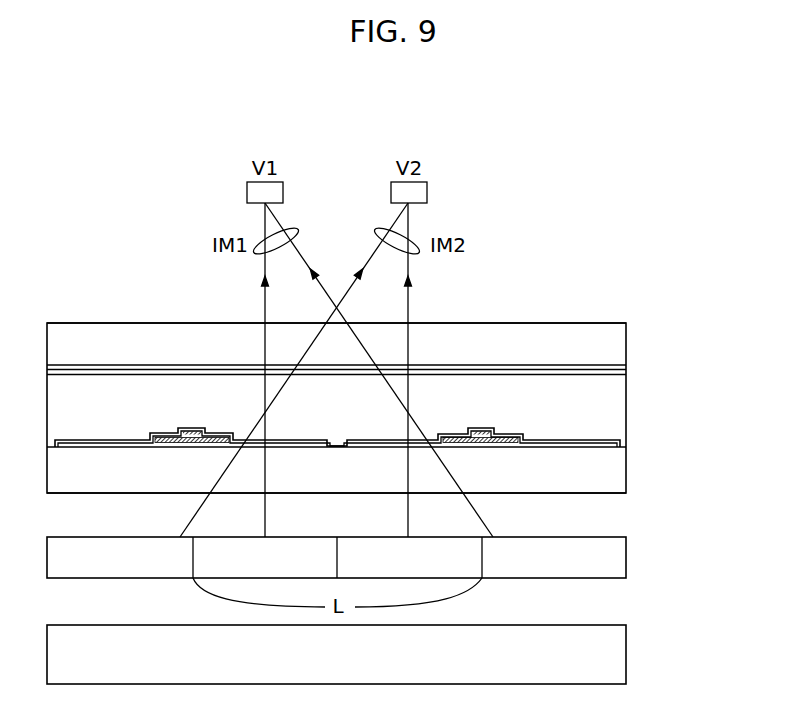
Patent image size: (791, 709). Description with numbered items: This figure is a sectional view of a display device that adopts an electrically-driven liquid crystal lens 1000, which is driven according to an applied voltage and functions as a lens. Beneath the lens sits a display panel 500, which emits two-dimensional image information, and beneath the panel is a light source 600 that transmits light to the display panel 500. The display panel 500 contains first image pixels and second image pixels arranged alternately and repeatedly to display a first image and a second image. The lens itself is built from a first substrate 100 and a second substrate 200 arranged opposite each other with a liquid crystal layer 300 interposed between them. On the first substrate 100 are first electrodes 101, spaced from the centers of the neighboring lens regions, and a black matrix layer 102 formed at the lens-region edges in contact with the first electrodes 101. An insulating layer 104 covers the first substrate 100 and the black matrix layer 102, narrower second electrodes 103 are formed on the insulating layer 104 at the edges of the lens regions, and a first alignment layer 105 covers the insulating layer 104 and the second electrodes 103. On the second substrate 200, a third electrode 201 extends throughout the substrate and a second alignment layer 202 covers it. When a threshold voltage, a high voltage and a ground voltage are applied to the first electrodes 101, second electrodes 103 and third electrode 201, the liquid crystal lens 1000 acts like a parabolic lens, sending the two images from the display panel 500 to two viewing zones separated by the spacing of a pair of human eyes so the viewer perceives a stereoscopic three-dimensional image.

The first substrate 100 is at (617, 483).
The first electrodes 101 is at (123, 448).
The black matrix layer 102 is at (157, 437).
The second electrodes 103 is at (190, 430).
The insulating layer 104 is at (626, 449).
The first alignment layer 105 is at (626, 443).
The second substrate 200 is at (617, 335).
The third electrode 201 is at (626, 366).
The second alignment layer 202 is at (626, 374).
The liquid crystal layer 300 is at (617, 428).
The display panel 500 is at (612, 563).
The light source 600 is at (617, 652).
The electrically-driven liquid crystal lens 1000 is at (713, 323).